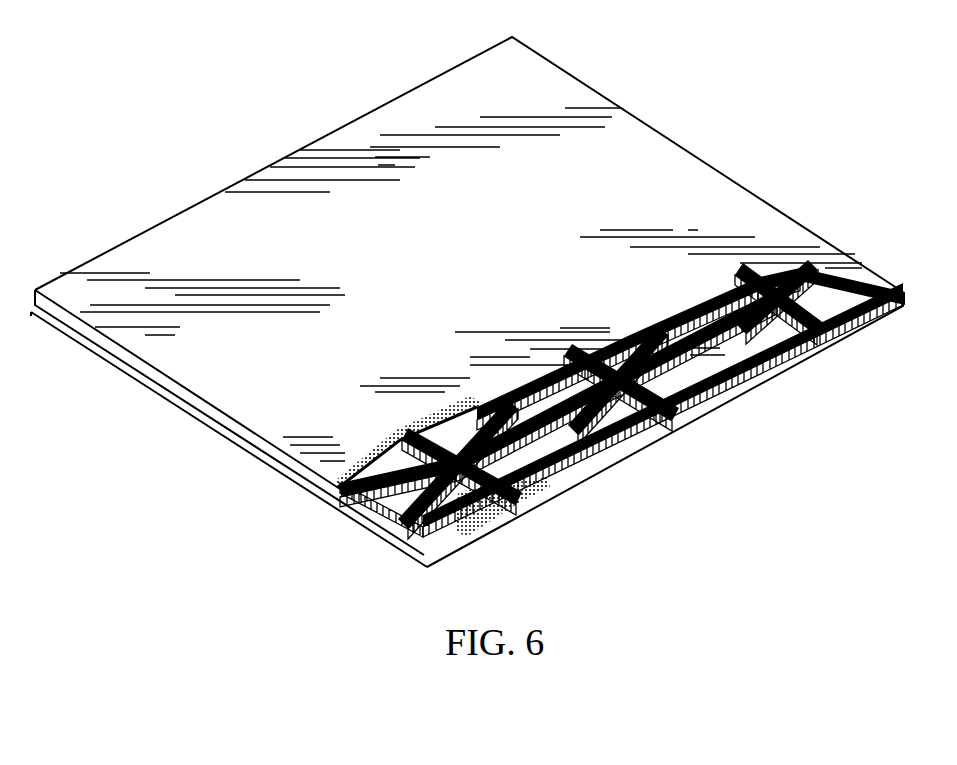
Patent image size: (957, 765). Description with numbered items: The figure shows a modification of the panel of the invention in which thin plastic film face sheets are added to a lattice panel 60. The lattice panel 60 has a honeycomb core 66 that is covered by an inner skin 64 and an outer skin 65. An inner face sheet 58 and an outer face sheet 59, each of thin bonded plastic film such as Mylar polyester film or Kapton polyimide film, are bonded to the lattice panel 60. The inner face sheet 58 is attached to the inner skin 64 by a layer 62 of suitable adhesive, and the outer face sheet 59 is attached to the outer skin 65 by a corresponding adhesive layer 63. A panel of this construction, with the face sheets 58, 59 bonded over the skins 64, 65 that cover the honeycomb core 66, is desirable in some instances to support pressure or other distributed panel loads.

The inner face sheet 58 is at (633, 450).
The outer face sheet 59 is at (452, 293).
The lattice panel 60 is at (352, 516).
The adhesive layer 62 is at (540, 498).
The adhesive layer 63 is at (398, 435).
The inner skin 64 is at (727, 393).
The outer skin 65 is at (823, 328).
The honeycomb core 66 is at (390, 520).